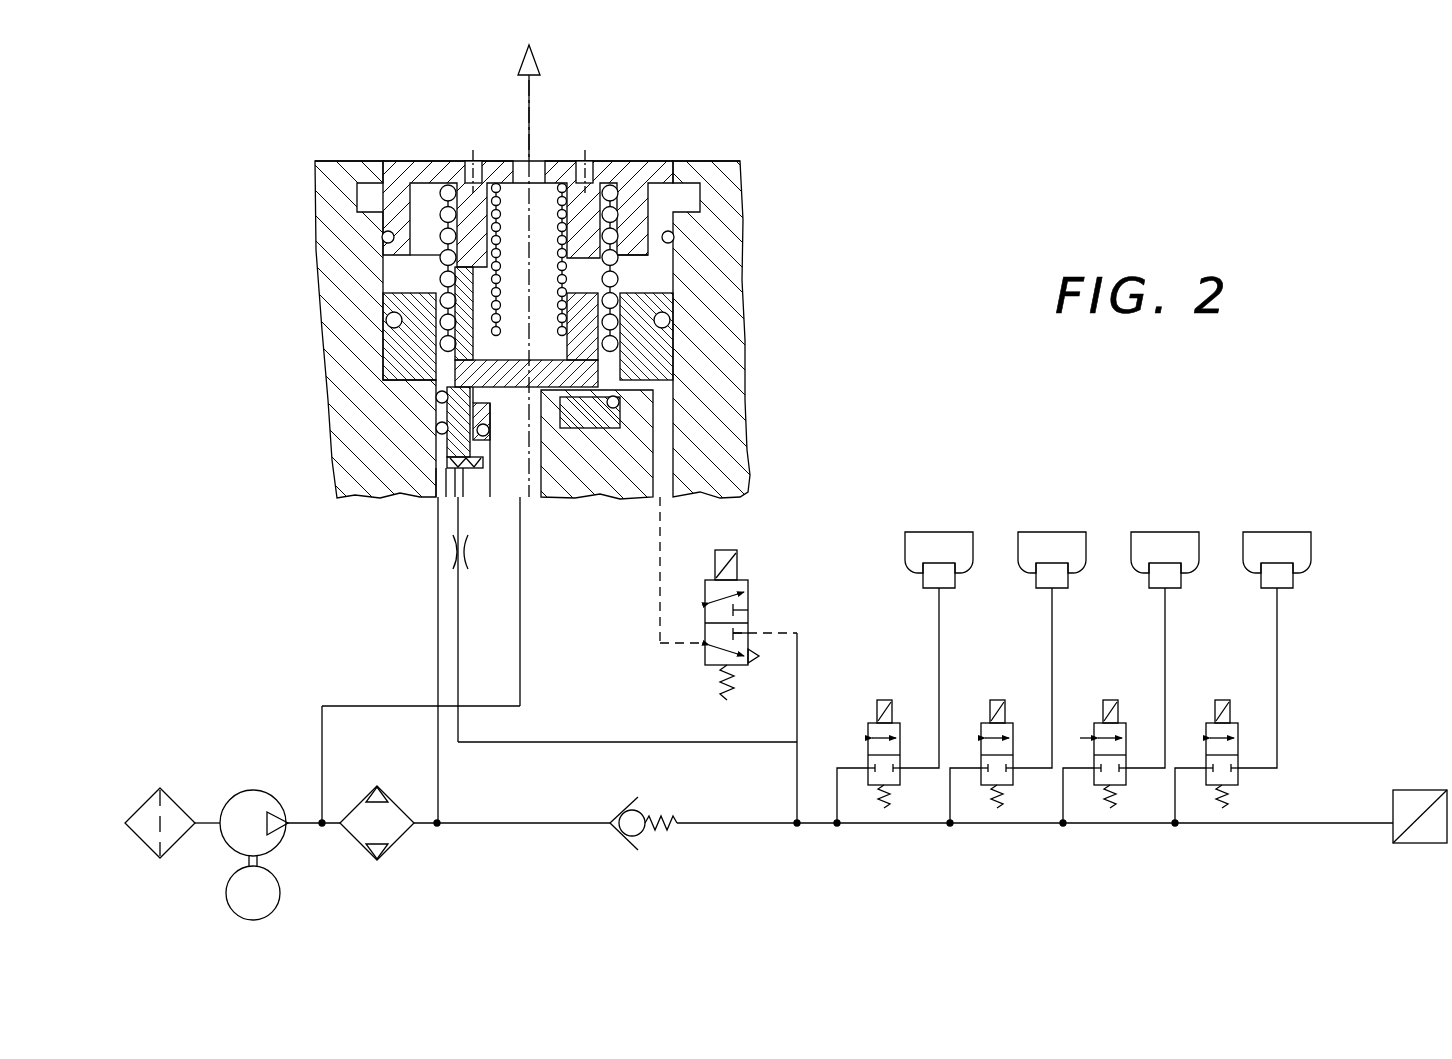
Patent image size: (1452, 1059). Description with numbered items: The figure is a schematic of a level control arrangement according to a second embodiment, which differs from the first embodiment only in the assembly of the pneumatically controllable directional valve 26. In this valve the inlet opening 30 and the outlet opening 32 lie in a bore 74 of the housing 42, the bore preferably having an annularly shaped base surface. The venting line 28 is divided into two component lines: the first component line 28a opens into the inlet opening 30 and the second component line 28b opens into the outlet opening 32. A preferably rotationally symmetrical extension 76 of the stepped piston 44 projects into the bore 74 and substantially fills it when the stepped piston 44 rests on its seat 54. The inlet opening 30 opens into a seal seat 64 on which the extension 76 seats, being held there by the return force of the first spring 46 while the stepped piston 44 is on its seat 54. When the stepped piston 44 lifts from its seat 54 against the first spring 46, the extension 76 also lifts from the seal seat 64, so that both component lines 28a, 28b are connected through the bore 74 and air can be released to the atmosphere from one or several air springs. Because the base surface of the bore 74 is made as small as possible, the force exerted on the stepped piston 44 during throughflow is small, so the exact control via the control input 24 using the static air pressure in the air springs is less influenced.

The control input 24 is at (663, 527).
The pneumatically controllable directional valve 26 is at (720, 380).
The venting line 28 is at (612, 742).
The first component line 28a is at (460, 688).
The second component line 28b is at (438, 685).
The inlet opening 30 is at (468, 480).
The outlet opening 32 is at (438, 490).
The housing 42 is at (710, 263).
The stepped piston 44 is at (405, 345).
The first spring 46 is at (443, 258).
The seat 54 is at (435, 397).
The seal seat 64 is at (492, 480).
The bore 74 is at (437, 466).
The extension 76 is at (440, 447).